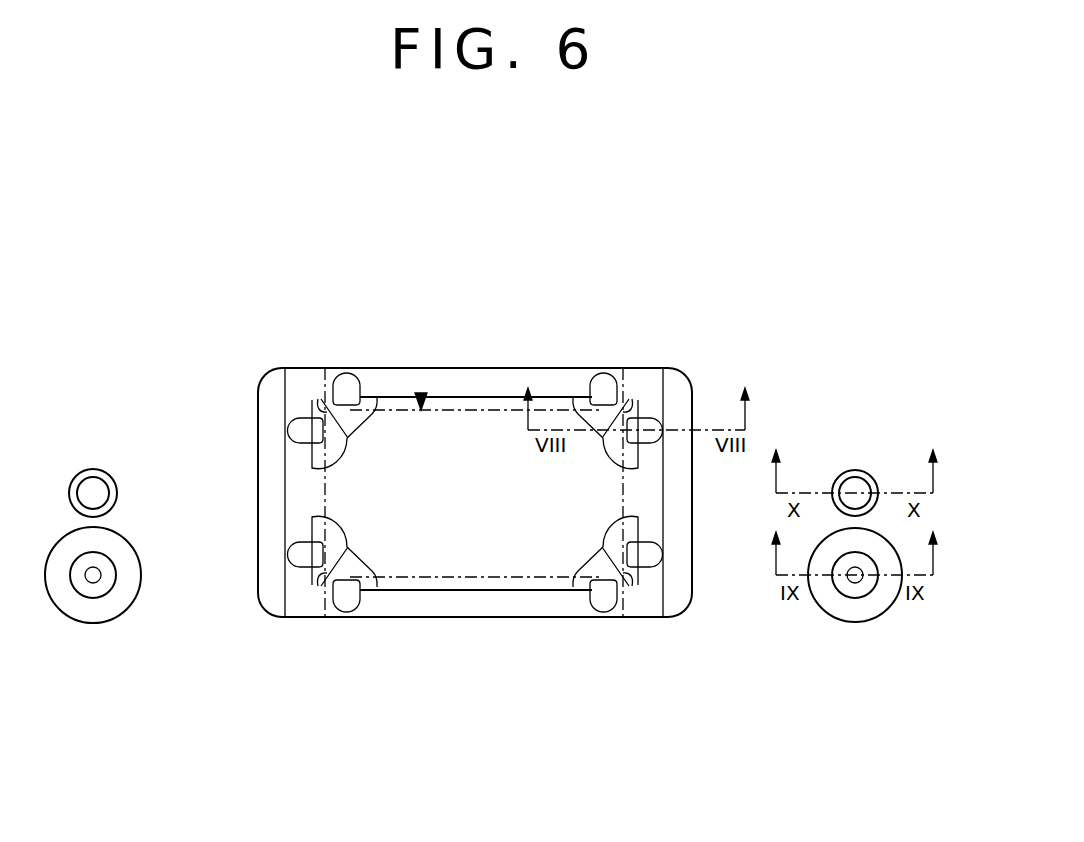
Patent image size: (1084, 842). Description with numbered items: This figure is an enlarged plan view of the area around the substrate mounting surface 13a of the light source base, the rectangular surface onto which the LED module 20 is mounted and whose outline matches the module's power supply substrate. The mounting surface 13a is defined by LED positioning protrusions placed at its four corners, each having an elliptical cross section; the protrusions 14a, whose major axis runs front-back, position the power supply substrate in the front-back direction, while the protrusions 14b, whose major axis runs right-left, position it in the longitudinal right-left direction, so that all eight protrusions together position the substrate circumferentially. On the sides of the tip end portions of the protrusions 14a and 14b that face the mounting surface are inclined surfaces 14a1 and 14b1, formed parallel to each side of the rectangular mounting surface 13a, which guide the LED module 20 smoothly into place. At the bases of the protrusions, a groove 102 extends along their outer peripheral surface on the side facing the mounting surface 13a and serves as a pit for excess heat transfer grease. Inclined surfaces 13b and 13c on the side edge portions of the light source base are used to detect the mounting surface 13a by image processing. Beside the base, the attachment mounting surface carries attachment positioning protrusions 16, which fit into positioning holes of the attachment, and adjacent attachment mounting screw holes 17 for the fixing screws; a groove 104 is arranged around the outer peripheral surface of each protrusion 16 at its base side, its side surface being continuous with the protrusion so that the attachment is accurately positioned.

The substrate mounting surface 13a is at (443, 462).
The inclined surface 13b is at (521, 392).
The inclined surface 13c is at (270, 511).
The protrusion 14a is at (347, 382).
The inclined surface 14a1 is at (327, 395).
The protrusion 14b is at (300, 432).
The inclined surface 14b1 is at (312, 400).
The attachment positioning protrusion 16 is at (93, 582).
The attachment mounting screw hole 17 is at (100, 483).
The LED module 20 is at (423, 393).
The groove 102 is at (580, 403).
The groove 104 is at (118, 600).